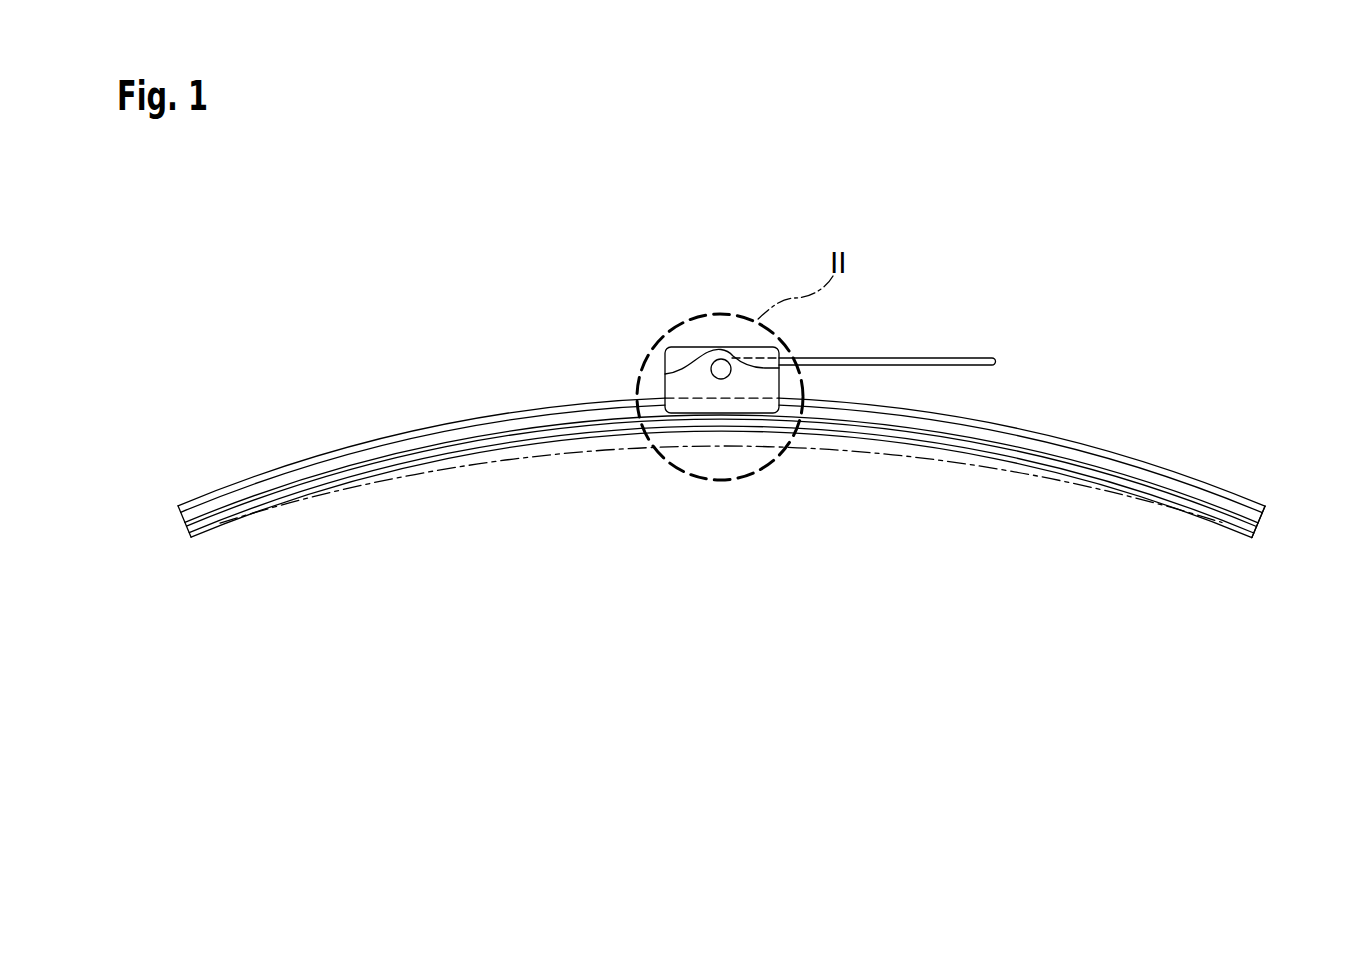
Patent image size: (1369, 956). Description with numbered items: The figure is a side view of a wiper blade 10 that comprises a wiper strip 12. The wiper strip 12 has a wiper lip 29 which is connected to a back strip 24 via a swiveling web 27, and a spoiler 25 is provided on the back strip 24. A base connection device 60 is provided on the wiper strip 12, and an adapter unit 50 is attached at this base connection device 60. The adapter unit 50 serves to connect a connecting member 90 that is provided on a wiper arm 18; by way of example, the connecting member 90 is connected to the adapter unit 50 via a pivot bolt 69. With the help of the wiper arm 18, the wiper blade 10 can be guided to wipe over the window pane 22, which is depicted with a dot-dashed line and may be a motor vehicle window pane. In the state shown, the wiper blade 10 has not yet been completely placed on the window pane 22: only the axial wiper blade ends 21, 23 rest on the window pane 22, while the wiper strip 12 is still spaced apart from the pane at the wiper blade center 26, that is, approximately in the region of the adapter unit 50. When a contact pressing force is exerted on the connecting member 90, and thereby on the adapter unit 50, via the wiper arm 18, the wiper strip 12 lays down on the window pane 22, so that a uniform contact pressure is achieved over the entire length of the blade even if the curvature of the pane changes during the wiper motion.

The wiper blade 10 is at (580, 319).
The wiper strip 12 is at (1265, 520).
The wiper arm 18 is at (888, 358).
The axial wiper blade end 21 is at (180, 541).
The window pane 22 is at (670, 446).
The axial wiper blade end 23 is at (1263, 540).
The back strip 24 is at (197, 511).
The spoiler 25 is at (1012, 433).
The wiper blade center 26 is at (716, 455).
The swiveling web 27 is at (187, 525).
The wiper lip 29 is at (822, 433).
The adapter unit 50 is at (665, 376).
The base connection device 60 is at (724, 405).
The pivot bolt 69 is at (721, 366).
The connecting member 90 is at (683, 360).